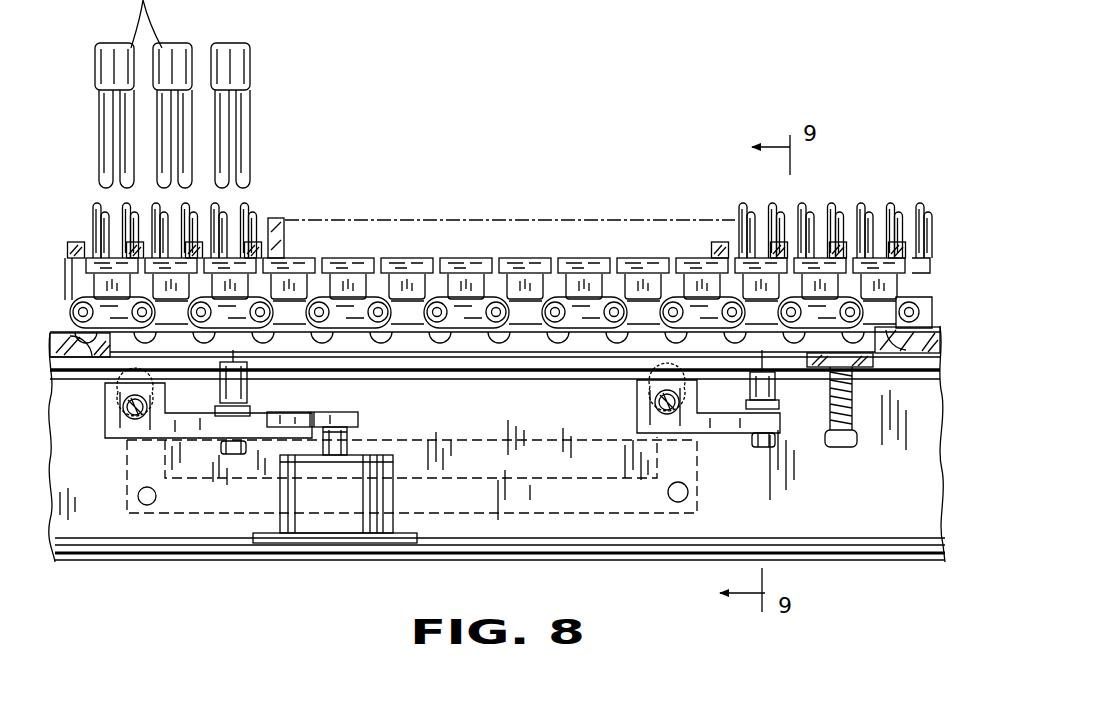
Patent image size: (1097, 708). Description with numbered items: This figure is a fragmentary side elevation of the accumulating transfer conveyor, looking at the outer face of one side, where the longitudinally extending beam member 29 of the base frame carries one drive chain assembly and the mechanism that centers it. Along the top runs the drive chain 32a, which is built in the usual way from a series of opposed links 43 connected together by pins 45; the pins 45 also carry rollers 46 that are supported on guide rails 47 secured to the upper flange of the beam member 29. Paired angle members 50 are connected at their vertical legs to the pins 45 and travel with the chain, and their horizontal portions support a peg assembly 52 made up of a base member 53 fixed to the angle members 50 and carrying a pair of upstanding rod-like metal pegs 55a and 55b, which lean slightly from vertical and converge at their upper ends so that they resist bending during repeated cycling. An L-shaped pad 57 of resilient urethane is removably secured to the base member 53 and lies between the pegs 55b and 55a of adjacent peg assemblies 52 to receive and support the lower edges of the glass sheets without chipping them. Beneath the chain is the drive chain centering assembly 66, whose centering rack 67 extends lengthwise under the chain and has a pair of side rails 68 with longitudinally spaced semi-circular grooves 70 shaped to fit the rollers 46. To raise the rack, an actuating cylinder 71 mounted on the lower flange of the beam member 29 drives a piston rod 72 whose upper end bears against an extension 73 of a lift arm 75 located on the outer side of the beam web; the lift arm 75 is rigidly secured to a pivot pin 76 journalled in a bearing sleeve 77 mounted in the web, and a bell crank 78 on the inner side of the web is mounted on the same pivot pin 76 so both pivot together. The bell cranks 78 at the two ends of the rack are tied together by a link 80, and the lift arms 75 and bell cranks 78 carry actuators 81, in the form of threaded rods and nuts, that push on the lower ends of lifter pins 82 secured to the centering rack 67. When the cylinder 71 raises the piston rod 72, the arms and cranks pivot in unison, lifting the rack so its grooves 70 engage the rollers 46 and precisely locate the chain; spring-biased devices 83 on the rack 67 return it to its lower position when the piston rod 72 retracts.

The beam member 29 is at (612, 558).
The drive chain 32a is at (484, 292).
The opposed links 43 is at (470, 308).
The pins 45 is at (557, 322).
The rollers 46 is at (378, 300).
The guide rails 47 is at (95, 366).
The angle members 50 is at (654, 282).
The peg assembly 52 is at (93, 108).
The base member 53 is at (578, 264).
The peg 55a is at (96, 212).
The peg 55b is at (126, 206).
The L-shaped pad 57 is at (284, 212).
The drive chain centering assembly 66 is at (193, 538).
The centering rack 67 is at (572, 368).
The side rails 68 is at (472, 352).
The arcuate grooves 70 is at (438, 340).
The actuating cylinder 71 is at (334, 525).
The piston rod 72 is at (350, 443).
The extension 73 is at (327, 415).
The lift arm 75 is at (182, 430).
The pivot pin 76 is at (128, 420).
The bearing sleeve 77 is at (110, 405).
The bell crank 78 is at (133, 478).
The link 80 is at (230, 508).
The actuators 81 is at (247, 409).
The lifter pins 82 is at (224, 383).
The spring-biased devices 83 is at (862, 418).